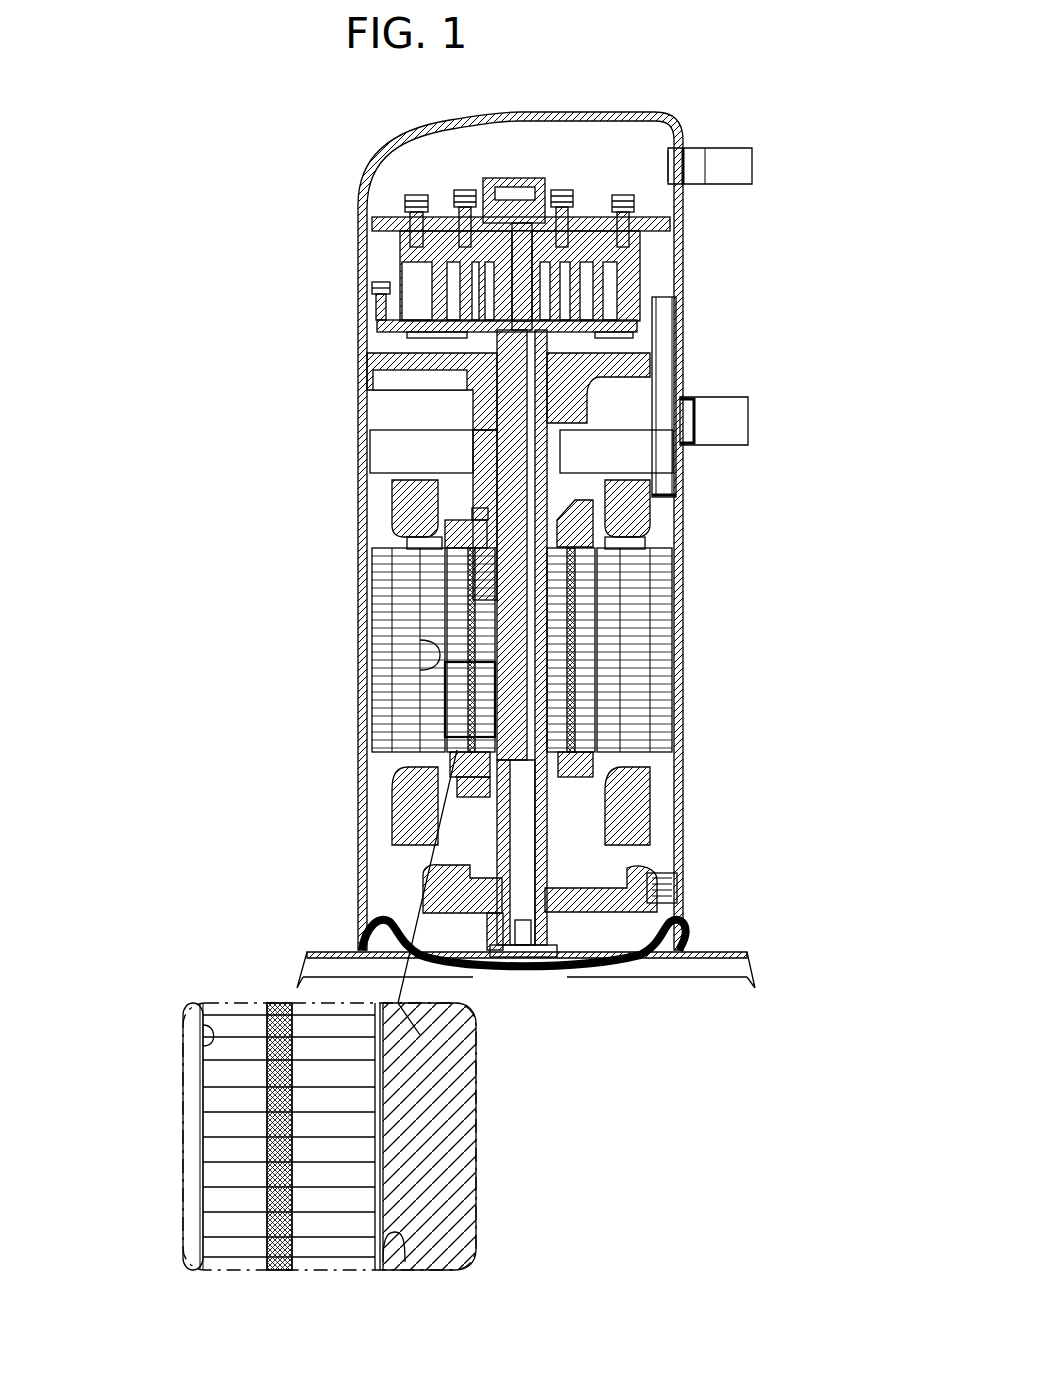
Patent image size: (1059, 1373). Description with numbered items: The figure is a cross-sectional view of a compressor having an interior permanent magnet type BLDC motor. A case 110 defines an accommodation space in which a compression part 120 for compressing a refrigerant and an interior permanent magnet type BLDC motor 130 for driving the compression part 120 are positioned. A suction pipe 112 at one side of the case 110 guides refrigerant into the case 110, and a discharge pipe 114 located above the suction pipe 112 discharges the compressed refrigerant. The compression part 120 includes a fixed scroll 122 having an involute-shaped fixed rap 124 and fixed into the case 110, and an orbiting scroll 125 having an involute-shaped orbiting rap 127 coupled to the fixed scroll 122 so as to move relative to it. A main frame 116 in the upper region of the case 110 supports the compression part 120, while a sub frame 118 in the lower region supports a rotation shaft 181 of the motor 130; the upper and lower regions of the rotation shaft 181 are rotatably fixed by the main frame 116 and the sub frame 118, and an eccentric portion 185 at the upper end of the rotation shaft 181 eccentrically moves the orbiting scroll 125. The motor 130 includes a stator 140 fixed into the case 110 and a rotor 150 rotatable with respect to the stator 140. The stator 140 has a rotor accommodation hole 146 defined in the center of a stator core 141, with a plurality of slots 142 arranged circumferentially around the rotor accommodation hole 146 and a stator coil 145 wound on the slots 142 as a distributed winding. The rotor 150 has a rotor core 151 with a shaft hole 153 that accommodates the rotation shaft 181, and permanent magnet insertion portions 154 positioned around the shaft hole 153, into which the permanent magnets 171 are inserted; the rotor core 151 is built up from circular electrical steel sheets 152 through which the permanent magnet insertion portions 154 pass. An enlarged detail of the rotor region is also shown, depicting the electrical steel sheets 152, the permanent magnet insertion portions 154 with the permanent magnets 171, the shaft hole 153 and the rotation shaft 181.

The case 110 is at (440, 121).
The suction pipe 112 is at (718, 396).
The discharge pipe 114 is at (705, 147).
The main frame 116 is at (387, 355).
The sub frame 118 is at (604, 900).
The compression part 120 is at (282, 213).
The fixed scroll 122 is at (407, 270).
The fixed rap 124 is at (450, 253).
The orbiting scroll 125 is at (395, 335).
The orbiting rap 127 is at (440, 300).
The interior permanent magnet type BLDC motor 130 is at (268, 733).
The stator 140 is at (280, 478).
The stator core 141 is at (380, 612).
The slots 142 is at (413, 570).
The stator coil 145 is at (410, 503).
The rotor accommodation hole 146 is at (443, 642).
The rotor 150 is at (181, 1256).
The rotor core 151 is at (100, 1128).
The electrical steel sheets 152 is at (215, 1175).
The shaft hole 153 is at (385, 1265).
The permanent magnet insertion portions 154 is at (450, 726).
The permanent magnet 171 is at (468, 690).
The rotation shaft 181 is at (633, 546).
The eccentric portion 185 is at (527, 360).